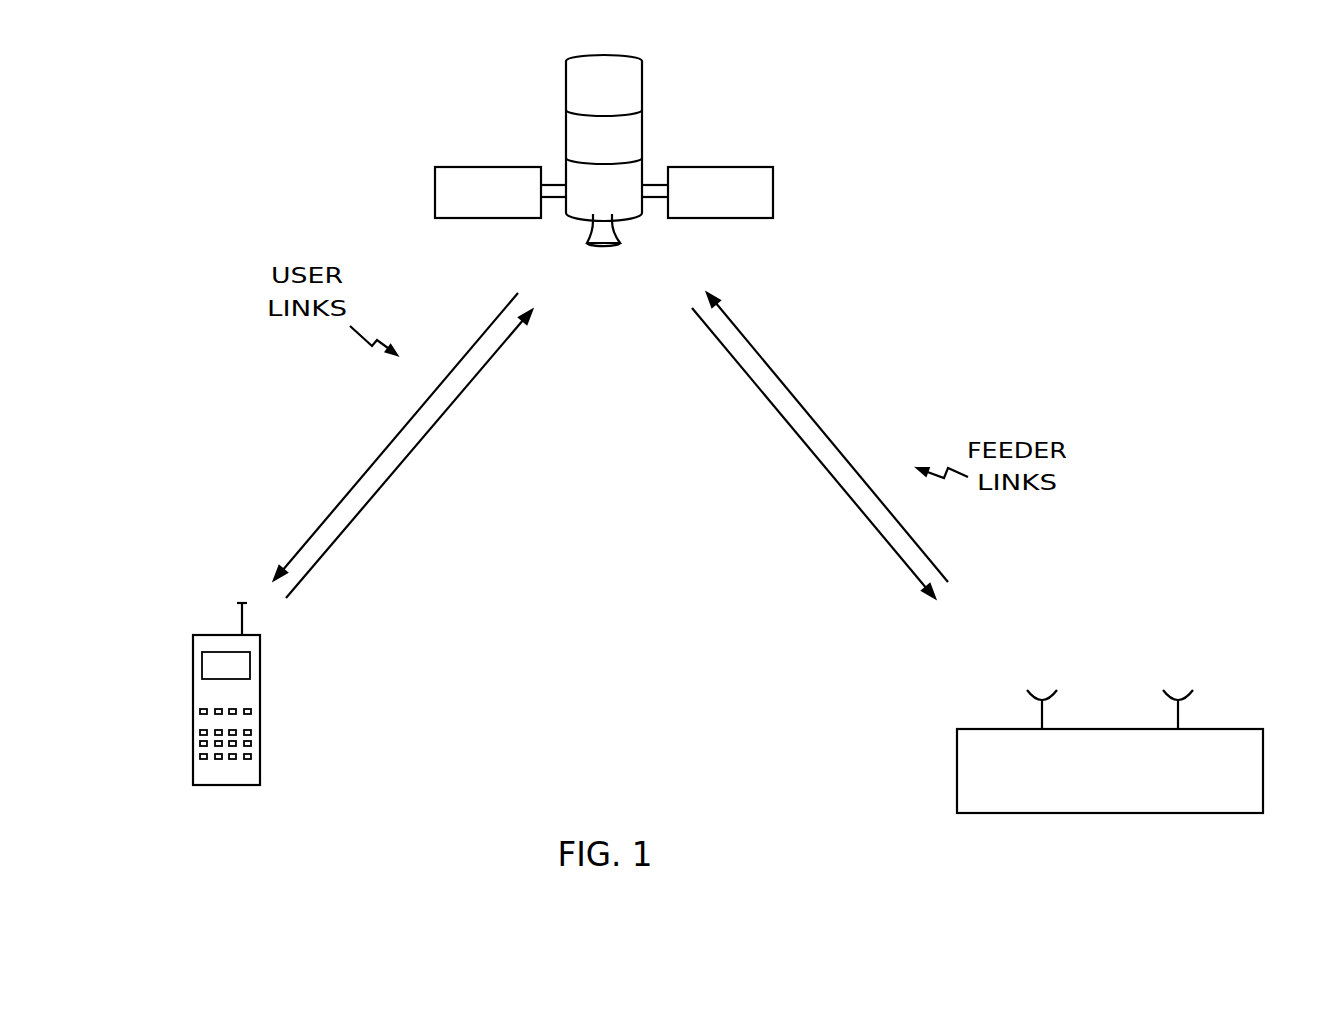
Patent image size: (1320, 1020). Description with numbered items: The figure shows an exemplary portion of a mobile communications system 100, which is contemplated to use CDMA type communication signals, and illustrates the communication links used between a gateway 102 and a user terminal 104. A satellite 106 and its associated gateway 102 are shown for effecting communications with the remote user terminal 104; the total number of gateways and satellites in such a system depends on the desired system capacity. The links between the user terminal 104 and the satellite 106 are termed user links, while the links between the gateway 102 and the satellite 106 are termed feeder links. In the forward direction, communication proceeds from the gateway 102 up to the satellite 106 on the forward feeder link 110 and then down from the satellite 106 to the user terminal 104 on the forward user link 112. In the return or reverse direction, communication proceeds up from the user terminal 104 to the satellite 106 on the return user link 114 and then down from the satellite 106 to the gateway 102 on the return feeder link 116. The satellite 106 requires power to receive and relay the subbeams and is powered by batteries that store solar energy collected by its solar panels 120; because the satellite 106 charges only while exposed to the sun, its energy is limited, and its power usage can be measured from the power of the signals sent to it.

The communications system 100 is at (1146, 117).
The gateway 102 is at (1232, 728).
The user terminal 104 is at (230, 786).
The satellite 106 is at (603, 246).
The forward feeder link 110 is at (783, 385).
The forward user link 112 is at (347, 490).
The return user link 114 is at (467, 387).
The return feeder link 116 is at (827, 473).
The solar panels 120 is at (453, 166).